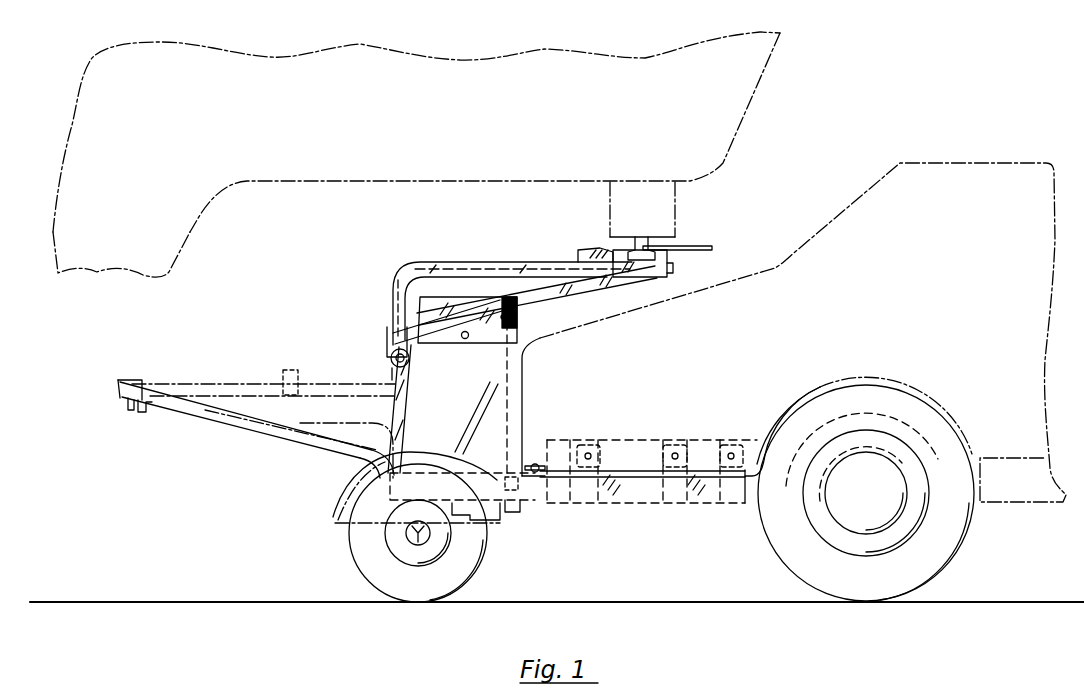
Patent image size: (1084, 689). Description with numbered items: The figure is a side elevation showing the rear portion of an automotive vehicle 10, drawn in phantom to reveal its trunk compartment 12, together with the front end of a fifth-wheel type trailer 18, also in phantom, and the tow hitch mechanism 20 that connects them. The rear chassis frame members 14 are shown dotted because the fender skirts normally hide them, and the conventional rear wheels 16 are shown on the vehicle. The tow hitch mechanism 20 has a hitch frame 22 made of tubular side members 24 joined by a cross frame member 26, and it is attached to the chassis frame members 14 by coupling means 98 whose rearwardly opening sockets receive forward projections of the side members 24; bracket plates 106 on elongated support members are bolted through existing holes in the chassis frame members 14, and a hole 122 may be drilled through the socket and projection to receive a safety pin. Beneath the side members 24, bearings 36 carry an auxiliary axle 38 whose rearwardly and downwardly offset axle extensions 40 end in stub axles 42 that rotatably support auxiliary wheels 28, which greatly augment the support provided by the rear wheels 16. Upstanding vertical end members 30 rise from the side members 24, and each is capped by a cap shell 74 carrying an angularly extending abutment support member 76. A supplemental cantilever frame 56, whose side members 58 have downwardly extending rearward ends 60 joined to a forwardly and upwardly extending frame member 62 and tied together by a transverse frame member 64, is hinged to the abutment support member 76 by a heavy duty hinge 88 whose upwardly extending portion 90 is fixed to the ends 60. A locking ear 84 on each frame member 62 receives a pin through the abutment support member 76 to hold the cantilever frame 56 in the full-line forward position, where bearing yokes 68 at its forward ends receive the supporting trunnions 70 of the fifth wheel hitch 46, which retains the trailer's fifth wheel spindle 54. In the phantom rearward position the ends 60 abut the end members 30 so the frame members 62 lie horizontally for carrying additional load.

The automotive vehicle 10 is at (803, 332).
The trunk compartment 12 is at (680, 391).
The rear chassis frame members 14 is at (657, 443).
The rear wheels 16 is at (787, 540).
The fifth-wheel type trailer 18 is at (740, 107).
The tow hitch mechanism 20 is at (378, 455).
The hitch frame 22 is at (478, 470).
The side members 24 is at (397, 487).
The cross frame member 26 is at (506, 480).
The auxiliary wheels 28 is at (370, 570).
The upstanding vertical end members 30 is at (510, 390).
The bearings 36 is at (515, 511).
The auxiliary axle 38 is at (480, 518).
The axle extensions 40 is at (460, 540).
The stub axles 42 is at (423, 540).
The fifth wheel hitch 46 is at (697, 240).
The fifth wheel spindle 54 is at (637, 242).
The supplemental cantilever frame 56 is at (487, 257).
The side members 58 is at (450, 272).
The downwardly extending rearward ends 60 is at (393, 290).
The frame member 62 is at (550, 295).
The transverse frame member 64 is at (387, 327).
The bearing yokes 68 is at (671, 268).
The supporting trunnions 70 is at (647, 265).
The cap shell 74 is at (477, 343).
The abutment support member 76 is at (440, 333).
The locking ear 84 is at (510, 322).
The heavy duty hinge 88 is at (391, 370).
The hinge portion 90 is at (390, 347).
The coupling means 98 is at (572, 508).
The bracket plates 106 is at (600, 460).
The hole 122 is at (550, 507).